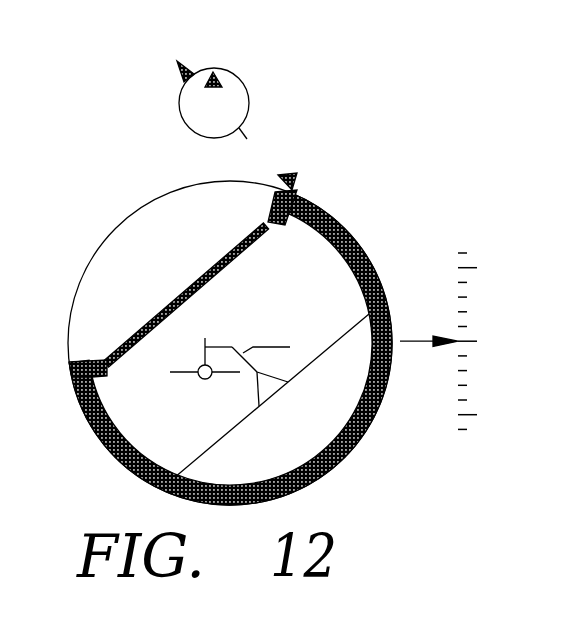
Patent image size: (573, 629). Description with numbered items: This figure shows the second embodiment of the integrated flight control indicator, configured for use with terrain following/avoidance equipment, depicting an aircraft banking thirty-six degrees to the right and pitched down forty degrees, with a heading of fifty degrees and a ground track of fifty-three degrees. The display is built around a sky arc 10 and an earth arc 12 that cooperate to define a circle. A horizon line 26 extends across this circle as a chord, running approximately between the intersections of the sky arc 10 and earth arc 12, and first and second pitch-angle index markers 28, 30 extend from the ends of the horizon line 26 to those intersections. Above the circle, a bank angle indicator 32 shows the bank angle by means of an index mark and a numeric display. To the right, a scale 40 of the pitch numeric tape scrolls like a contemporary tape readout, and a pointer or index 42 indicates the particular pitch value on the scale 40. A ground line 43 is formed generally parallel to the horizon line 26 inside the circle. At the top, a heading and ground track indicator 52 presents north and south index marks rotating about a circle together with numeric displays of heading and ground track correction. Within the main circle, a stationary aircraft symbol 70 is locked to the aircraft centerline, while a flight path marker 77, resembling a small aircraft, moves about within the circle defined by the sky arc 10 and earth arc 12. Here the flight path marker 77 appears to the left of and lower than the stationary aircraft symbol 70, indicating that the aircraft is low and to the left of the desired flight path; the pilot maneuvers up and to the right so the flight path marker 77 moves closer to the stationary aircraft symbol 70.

The sky arc 10 is at (110, 232).
The earth arc 12 is at (343, 458).
The horizon line 26 is at (173, 302).
The first pitch-angle index marker 28 is at (88, 361).
The second pitch-angle index marker 30 is at (273, 206).
The bank angle indicator 32 is at (311, 158).
The scale 40 is at (502, 240).
The pointer or index 42 is at (424, 339).
The ground line 43 is at (235, 427).
The heading and ground track indicator 52 is at (260, 83).
The stationary aircraft symbol 70 is at (273, 346).
The flight path marker 77 is at (203, 380).